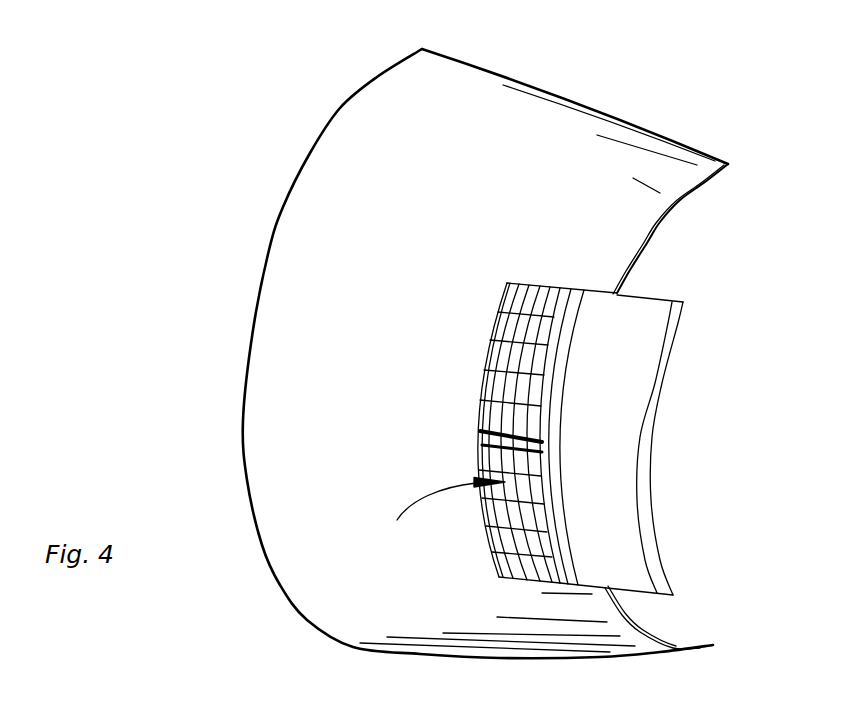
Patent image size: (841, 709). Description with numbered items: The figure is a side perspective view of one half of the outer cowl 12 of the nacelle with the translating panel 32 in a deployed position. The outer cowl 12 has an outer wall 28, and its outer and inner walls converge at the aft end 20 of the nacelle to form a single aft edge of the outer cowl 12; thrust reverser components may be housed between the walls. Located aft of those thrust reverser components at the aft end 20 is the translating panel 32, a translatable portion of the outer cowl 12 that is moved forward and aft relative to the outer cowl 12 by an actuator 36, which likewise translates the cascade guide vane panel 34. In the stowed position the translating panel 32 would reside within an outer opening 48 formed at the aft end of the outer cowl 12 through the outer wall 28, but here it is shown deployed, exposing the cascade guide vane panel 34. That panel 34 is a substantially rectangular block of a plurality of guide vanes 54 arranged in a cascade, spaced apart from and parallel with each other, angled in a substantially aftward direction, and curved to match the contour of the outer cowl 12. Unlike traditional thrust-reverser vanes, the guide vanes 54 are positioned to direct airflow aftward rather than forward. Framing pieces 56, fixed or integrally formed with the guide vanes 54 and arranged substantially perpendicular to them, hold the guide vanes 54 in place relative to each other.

The outer cowl 12 is at (730, 88).
The aft end 20 is at (648, 243).
The outer wall 28 is at (345, 138).
The translating panel 32 is at (628, 383).
The cascade guide vane panel 34 is at (492, 362).
The actuator 36 is at (497, 432).
The outer opening 48 is at (434, 514).
The guide vanes 54 is at (503, 556).
The framing pieces 56 is at (520, 307).